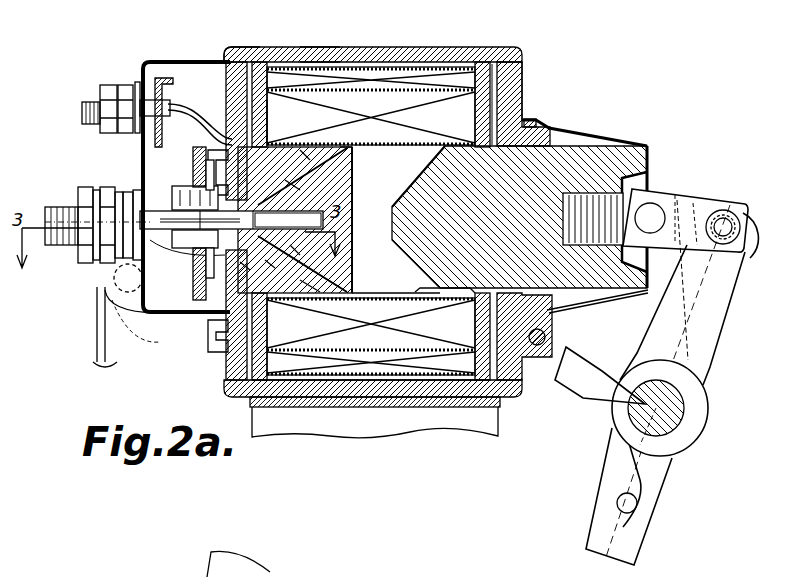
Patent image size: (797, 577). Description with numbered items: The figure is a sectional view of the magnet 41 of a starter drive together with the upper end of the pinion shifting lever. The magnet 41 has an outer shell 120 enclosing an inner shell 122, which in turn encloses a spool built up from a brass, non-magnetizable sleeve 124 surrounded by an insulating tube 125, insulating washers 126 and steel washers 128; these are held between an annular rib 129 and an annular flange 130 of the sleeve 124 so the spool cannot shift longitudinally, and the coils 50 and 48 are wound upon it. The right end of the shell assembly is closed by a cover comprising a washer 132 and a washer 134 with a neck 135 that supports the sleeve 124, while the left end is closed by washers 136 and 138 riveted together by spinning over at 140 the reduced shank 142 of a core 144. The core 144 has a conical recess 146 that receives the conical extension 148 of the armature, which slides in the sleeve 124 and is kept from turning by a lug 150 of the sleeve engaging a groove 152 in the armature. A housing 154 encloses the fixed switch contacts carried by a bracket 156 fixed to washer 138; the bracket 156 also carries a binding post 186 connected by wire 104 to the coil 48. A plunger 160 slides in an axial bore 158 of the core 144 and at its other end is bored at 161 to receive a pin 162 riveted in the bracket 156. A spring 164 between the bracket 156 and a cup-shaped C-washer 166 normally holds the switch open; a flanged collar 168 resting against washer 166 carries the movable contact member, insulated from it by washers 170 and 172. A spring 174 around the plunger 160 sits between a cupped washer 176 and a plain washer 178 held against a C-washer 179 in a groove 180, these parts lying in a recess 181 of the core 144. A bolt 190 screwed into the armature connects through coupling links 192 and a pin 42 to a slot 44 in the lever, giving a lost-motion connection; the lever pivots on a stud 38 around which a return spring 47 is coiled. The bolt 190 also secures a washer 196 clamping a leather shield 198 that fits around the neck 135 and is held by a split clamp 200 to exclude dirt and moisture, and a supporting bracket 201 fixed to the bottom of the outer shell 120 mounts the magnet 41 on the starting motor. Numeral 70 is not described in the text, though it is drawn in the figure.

The magnet 41 is at (288, 32).
The outer shell 120 is at (390, 48).
The inner shell 122 is at (322, 58).
The washer 136 is at (236, 50).
The washer 132 is at (500, 78).
The washer 134 is at (508, 84).
The neck 135 is at (546, 122).
The split clamp 200 is at (536, 114).
The leather shield 198 is at (614, 131).
The washer 196 is at (649, 158).
The bolt 190 is at (640, 198).
The coupling links 192 is at (727, 212).
The pin 42 is at (725, 225).
The slot 44 is at (752, 232).
The pivot stud 38 is at (684, 416).
The spring 47 is at (638, 488).
The coil 48 is at (352, 80).
The coil 50 is at (435, 110).
The insulating washers 126 is at (270, 108).
The core 144 is at (360, 305).
The steel washers 128 is at (232, 392).
The supporting bracket 201 is at (345, 410).
The annular rib 129 is at (494, 150).
The plunger portion 70 is at (568, 272).
The conical extension 148 is at (405, 192).
The conical recess 146 is at (344, 270).
The lug 150 is at (418, 291).
The groove 152 is at (612, 292).
The annular flange 130 is at (295, 220).
The recess 181 is at (293, 160).
The C-washer 179 is at (250, 180).
The plunger 160 is at (350, 188).
The sleeve 124 is at (355, 150).
The insulating tube 125 is at (369, 185).
The axial bore 158 is at (284, 253).
The spring 174 is at (264, 267).
The cupped washer 176 is at (239, 272).
The reduced shank 142 is at (306, 287).
The groove 180 is at (184, 216).
The plain washer 178 is at (288, 224).
The housing 154 is at (184, 62).
The bracket 156 is at (142, 172).
The spun-over portion 140 is at (228, 152).
The binding post 186 is at (95, 100).
The washer 138 is at (230, 80).
The wire 104 is at (200, 120).
The spring 164 is at (143, 246).
The bore 161 is at (128, 278).
The pin 162 is at (166, 212).
The insulating washers 170 is at (195, 233).
The insulating washers 172 is at (202, 235).
The C-washer 166 is at (195, 178).
The flanged collar 168 is at (210, 195).